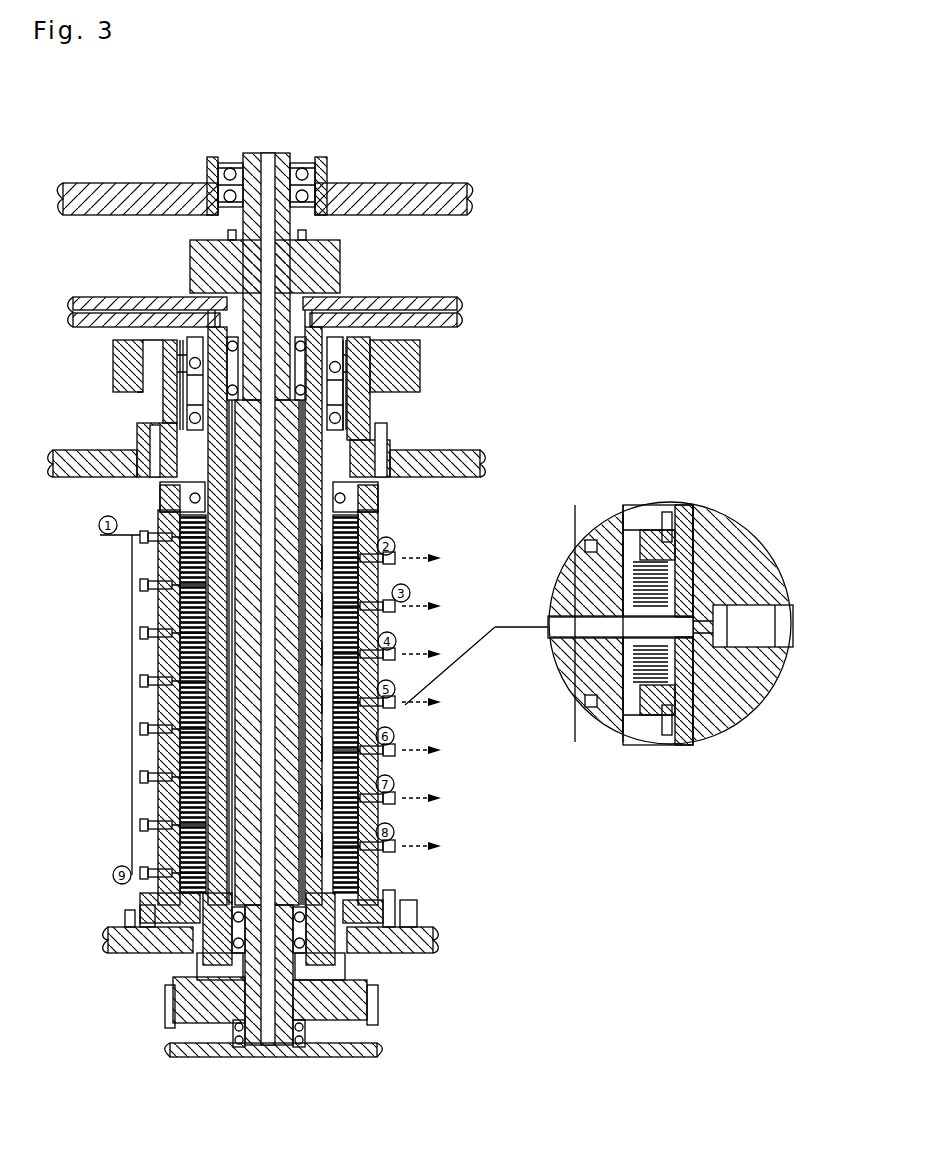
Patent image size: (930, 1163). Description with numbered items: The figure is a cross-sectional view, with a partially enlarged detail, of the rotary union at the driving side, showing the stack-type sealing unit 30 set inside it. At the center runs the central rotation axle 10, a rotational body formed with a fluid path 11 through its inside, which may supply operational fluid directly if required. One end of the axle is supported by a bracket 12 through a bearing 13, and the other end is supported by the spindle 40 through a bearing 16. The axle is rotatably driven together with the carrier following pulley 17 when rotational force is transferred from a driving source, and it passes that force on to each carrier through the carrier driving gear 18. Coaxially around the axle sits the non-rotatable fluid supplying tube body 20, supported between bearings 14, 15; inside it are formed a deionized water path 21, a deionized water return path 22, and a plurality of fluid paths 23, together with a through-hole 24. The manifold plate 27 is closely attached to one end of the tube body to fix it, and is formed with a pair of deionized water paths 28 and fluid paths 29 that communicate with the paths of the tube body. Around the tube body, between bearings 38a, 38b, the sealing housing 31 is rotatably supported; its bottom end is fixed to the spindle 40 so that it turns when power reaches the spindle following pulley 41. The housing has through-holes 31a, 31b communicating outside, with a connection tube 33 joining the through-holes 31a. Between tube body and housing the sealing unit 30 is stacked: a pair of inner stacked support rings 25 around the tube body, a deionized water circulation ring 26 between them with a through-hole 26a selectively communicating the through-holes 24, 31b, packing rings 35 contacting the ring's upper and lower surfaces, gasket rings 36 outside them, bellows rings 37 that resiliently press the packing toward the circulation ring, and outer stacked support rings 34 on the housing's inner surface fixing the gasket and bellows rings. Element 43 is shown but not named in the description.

The central rotation axle 10 is at (280, 263).
The fluid path 11 is at (265, 158).
The bracket 12 is at (212, 158).
The bearing 13 is at (298, 158).
The bearing 14 is at (405, 387).
The bearing 15 is at (312, 953).
The bearing 16 is at (302, 1024).
The carrier following pulley 17 is at (325, 275).
The carrier driving gear 18 is at (180, 1003).
The fluid supplying tube body 20 is at (160, 598).
The deionized water path 21 is at (170, 401).
The deionized water return path 22 is at (170, 738).
The fluid paths 23 is at (340, 378).
The through-hole 24 is at (378, 546).
The inner stacked support rings 25 is at (168, 808).
The deionized water circulation ring 26 is at (165, 775).
The through-hole 26a is at (650, 515).
The manifold plate 27 is at (96, 325).
The deionized water path 28 is at (122, 300).
The fluid path 29 is at (410, 300).
The sealing unit 30 is at (540, 576).
The sealing housing 31 is at (162, 560).
The through-holes 31a is at (158, 535).
The through-holes 31b is at (382, 565).
The connection tube 33 is at (132, 708).
The outer stacked support rings 34 is at (693, 520).
The packing rings 35 is at (670, 525).
The gasket rings 36 is at (640, 560).
The bellows rings 37 is at (170, 853).
The bearing 38a is at (190, 364).
The bearing 38b is at (390, 905).
The spindle 40 is at (410, 953).
The spindle following pulley 41 is at (325, 358).
The bottom plate 43 is at (350, 1058).